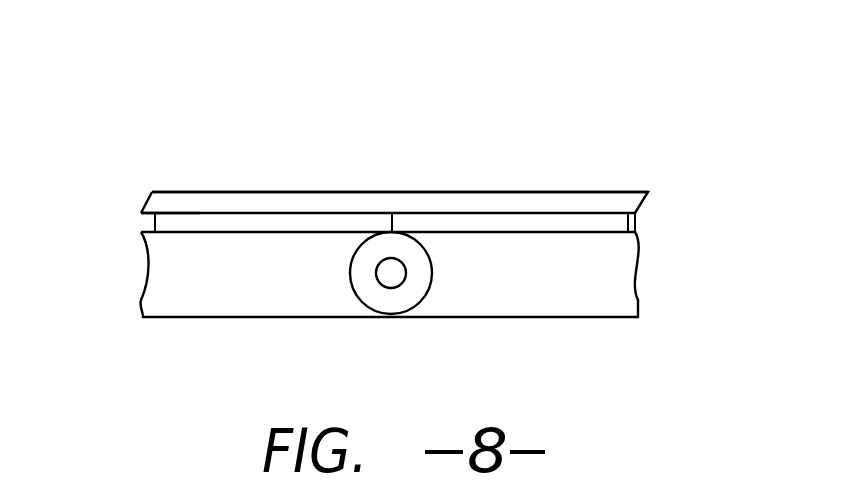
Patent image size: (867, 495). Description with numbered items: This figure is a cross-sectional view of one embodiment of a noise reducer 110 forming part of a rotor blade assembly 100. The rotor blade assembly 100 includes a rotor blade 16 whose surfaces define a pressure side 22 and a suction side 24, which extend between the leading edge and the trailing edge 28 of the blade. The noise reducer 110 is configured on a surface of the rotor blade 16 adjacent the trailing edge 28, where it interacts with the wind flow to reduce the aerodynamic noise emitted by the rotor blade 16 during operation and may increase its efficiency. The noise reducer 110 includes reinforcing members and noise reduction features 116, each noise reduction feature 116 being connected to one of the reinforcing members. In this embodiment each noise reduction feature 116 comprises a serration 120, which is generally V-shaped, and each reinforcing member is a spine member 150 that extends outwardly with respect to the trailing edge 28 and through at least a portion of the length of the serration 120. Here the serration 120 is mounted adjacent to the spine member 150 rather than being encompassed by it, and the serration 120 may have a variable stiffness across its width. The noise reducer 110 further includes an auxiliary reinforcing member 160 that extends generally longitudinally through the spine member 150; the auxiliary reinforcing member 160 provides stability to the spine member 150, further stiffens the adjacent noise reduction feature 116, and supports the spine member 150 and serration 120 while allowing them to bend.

The rotor blade 16 is at (487, 165).
The pressure side 22 is at (587, 318).
The suction side 24 is at (545, 192).
The trailing edge 28 is at (645, 203).
The rotor blade assembly 100 is at (596, 69).
The noise reducer 110 is at (716, 206).
The noise reduction feature 116 is at (189, 193).
The serration 120 is at (312, 212).
The spine member 150 is at (413, 289).
The auxiliary reinforcing member 160 is at (390, 273).